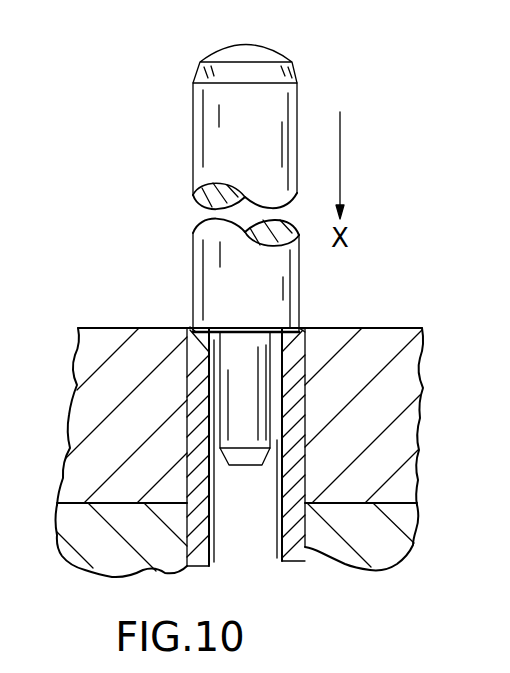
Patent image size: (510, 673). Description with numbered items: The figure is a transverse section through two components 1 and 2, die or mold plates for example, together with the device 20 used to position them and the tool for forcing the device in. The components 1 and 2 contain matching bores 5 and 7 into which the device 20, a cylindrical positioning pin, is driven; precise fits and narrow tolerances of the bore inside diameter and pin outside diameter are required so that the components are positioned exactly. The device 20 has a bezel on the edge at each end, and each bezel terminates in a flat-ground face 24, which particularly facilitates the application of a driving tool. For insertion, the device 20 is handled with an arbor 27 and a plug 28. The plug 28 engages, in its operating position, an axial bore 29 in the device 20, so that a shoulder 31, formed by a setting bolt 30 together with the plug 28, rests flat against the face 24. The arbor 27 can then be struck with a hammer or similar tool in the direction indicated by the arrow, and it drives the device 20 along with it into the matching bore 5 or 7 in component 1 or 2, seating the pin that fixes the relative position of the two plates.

The component 1 is at (100, 338).
The component 2 is at (90, 542).
The bore 5 is at (308, 447).
The bore 7 is at (327, 558).
The device 20 is at (283, 407).
The flat-ground face 24 is at (279, 332).
The arbor 27 is at (309, 101).
The plug 28 is at (260, 368).
The axial bore 29 is at (270, 482).
The setting bolt 30 is at (287, 275).
The shoulder 31 is at (197, 318).